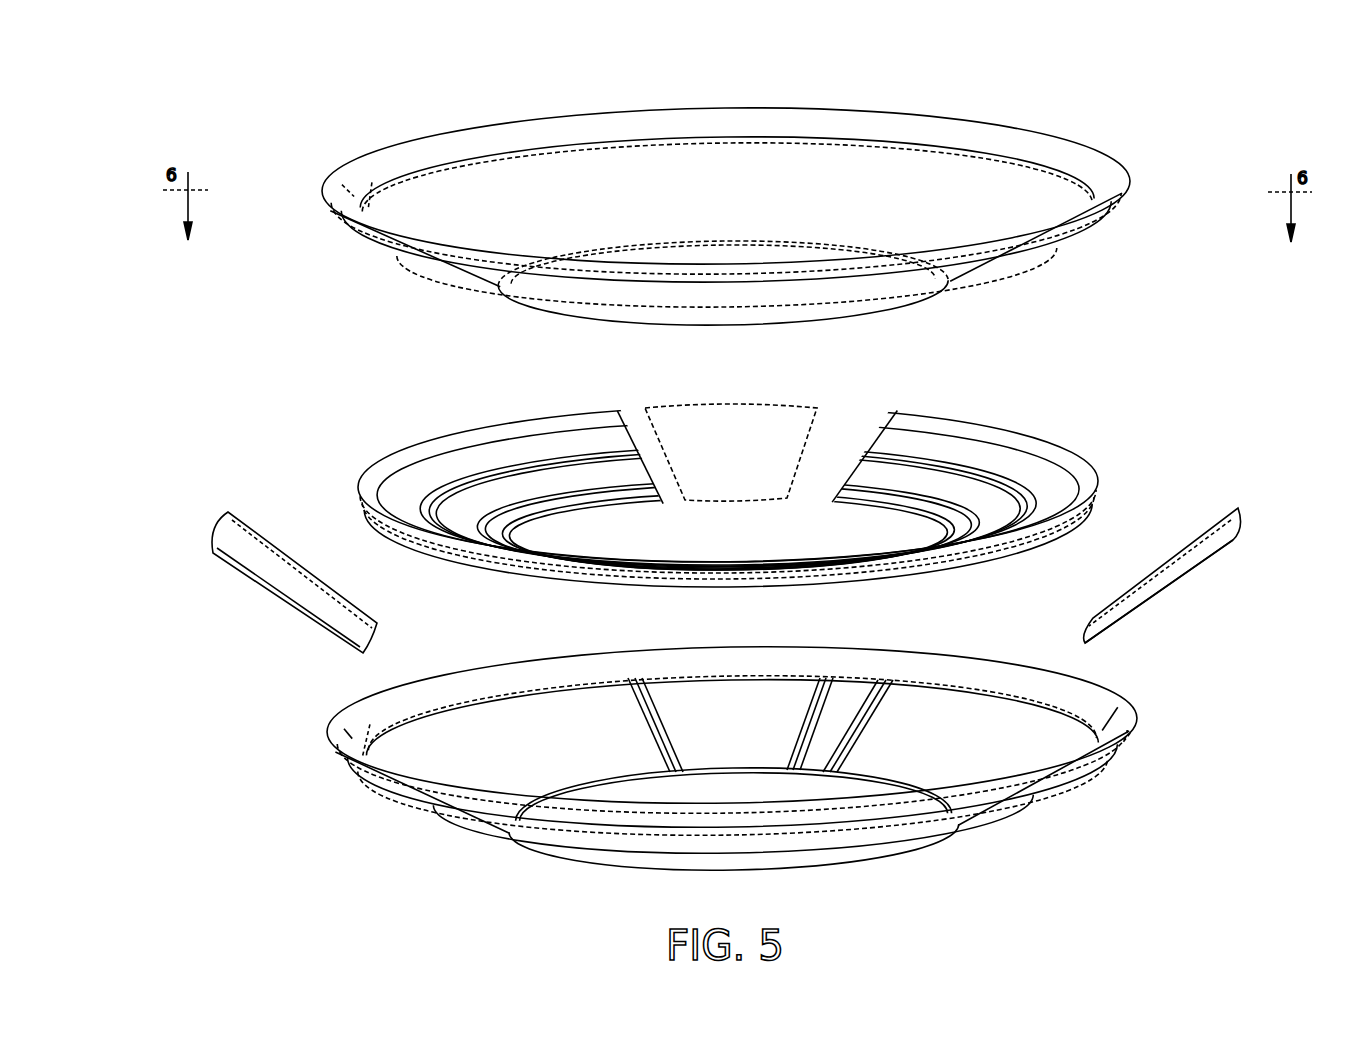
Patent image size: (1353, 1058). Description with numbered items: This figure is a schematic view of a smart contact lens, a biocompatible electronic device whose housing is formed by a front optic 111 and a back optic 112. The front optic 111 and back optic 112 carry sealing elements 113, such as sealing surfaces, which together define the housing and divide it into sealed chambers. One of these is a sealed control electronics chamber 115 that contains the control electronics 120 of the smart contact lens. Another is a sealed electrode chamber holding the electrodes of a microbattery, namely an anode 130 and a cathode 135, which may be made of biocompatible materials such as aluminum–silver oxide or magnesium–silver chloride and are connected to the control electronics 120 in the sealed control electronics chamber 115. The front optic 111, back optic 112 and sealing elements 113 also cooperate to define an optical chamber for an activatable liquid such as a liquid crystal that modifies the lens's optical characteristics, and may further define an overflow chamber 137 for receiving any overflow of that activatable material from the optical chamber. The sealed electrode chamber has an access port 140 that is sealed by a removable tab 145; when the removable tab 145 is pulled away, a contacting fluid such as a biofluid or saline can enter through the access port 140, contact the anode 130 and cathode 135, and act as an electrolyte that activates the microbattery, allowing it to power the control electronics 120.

The front optic 111 is at (734, 777).
The back optic 112 is at (970, 118).
The sealing elements 113 is at (597, 775).
The sealed control electronics chamber 115 is at (733, 764).
The control electronics 120 is at (731, 452).
The anode 130 is at (728, 472).
The cathode 135 is at (975, 492).
The overflow chamber 137 is at (858, 726).
The access port 140 is at (345, 726).
The removable tab 145 is at (235, 575).